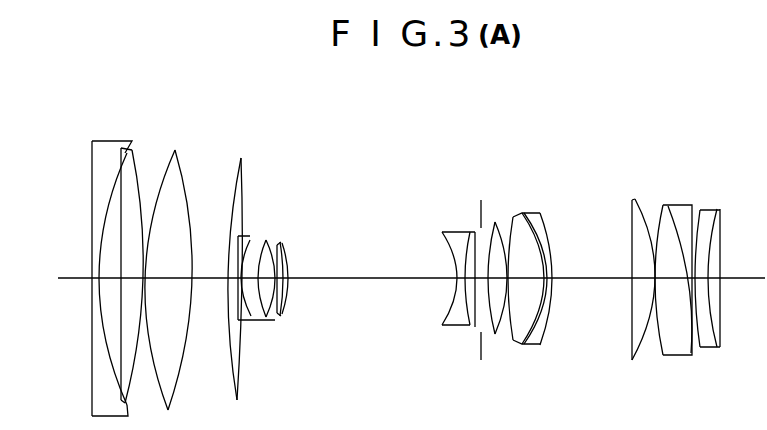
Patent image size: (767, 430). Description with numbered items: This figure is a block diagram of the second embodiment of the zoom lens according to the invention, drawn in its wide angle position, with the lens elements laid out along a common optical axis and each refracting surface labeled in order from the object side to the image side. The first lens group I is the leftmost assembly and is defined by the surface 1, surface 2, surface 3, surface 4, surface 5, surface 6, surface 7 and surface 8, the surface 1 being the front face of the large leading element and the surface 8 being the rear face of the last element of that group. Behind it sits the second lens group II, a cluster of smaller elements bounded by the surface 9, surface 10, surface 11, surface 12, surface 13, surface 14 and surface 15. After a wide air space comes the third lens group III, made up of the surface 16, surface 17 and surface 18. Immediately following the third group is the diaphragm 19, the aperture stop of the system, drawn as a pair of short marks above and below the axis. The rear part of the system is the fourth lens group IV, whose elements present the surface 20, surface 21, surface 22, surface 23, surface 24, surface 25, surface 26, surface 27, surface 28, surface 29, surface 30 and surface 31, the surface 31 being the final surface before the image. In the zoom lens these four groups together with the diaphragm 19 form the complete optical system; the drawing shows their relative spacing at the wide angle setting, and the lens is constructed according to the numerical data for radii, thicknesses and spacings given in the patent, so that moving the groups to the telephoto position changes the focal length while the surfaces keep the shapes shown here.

The first lens group surface 1 is at (95, 150).
The first lens group surface 2 is at (125, 151).
The first lens group surface 3 is at (122, 148).
The first lens group surface 4 is at (136, 150).
The first lens group surface 5 is at (174, 150).
The first lens group surface 6 is at (176, 150).
The first lens group surface 7 is at (238, 158).
The first lens group surface 8 is at (242, 156).
The second lens group surface 9 is at (243, 236).
The second lens group surface 10 is at (253, 238).
The second lens group surface 11 is at (266, 240).
The second lens group surface 12 is at (271, 240).
The second lens group surface 13 is at (279, 243).
The second lens group surface 14 is at (283, 242).
The second lens group surface 15 is at (289, 259).
The third lens group surface 16 is at (441, 232).
The third lens group surface 17 is at (467, 232).
The third lens group surface 18 is at (475, 232).
The diaphragm 19 is at (491, 222).
The fourth lens group surface 20 is at (495, 223).
The fourth lens group surface 21 is at (513, 217).
The fourth lens group surface 22 is at (518, 216).
The fourth lens group surface 23 is at (540, 213).
The fourth lens group surface 24 is at (545, 215).
The fourth lens group surface 25 is at (632, 200).
The fourth lens group surface 26 is at (640, 200).
The fourth lens group surface 27 is at (663, 205).
The fourth lens group surface 28 is at (688, 206).
The fourth lens group surface 29 is at (699, 211).
The fourth lens group surface 30 is at (714, 209).
The fourth lens group surface 31 is at (719, 209).